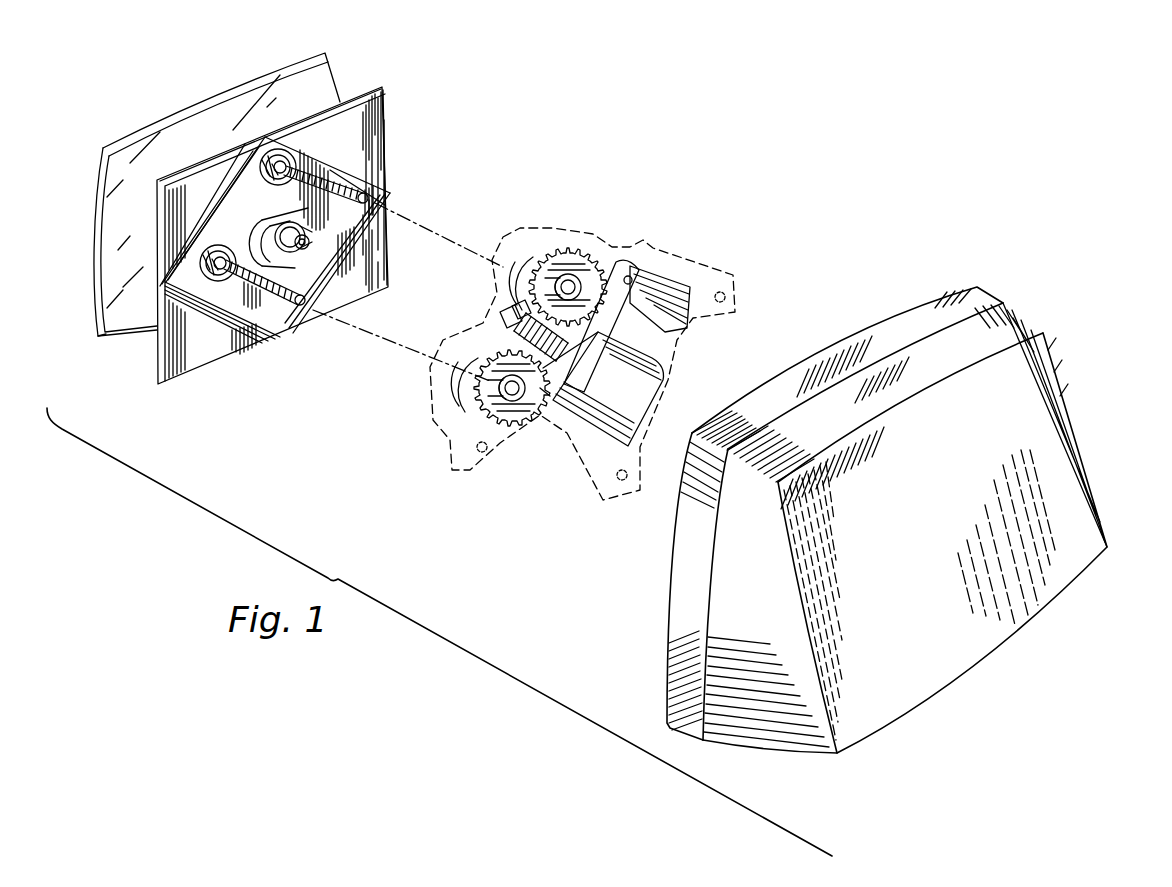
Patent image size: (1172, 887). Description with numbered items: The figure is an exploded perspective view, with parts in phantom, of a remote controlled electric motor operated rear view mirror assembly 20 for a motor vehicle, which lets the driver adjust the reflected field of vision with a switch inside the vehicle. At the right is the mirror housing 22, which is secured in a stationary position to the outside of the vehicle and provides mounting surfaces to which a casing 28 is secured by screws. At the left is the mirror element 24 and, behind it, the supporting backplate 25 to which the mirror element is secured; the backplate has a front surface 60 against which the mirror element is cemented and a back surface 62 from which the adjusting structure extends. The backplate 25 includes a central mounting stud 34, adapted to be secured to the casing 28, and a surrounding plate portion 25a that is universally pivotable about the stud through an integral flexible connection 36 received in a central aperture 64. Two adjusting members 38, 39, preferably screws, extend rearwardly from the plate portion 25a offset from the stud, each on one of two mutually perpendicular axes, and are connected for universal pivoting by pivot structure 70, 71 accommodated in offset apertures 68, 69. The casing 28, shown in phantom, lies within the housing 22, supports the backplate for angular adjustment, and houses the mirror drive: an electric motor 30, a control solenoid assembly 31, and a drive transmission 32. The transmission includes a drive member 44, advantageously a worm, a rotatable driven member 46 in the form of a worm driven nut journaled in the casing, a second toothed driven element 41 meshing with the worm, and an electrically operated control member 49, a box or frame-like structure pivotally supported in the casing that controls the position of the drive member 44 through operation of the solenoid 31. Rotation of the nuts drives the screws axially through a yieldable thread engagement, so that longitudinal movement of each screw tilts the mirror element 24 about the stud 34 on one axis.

The mirror assembly 20 is at (806, 226).
The mirror housing 22 is at (1068, 438).
The mirror element 24 is at (192, 104).
The supporting backplate 25 is at (385, 138).
The plate portion 25a is at (380, 263).
The casing 28 is at (600, 240).
The electric motor 30 is at (625, 395).
The control solenoid assembly 31 is at (670, 316).
The drive transmission 32 is at (550, 396).
The central mounting stud 34 is at (313, 233).
The integral flexible connection 36 is at (275, 219).
The adjusting member 38 is at (284, 300).
The adjusting member 39 is at (318, 178).
The upper gear 41 is at (558, 287).
The drive member 44 is at (498, 314).
The driven member 46 is at (500, 389).
The control member 49 is at (617, 330).
The front surface 60 is at (368, 93).
The back surface 62 is at (384, 107).
The central aperture 64 is at (287, 256).
The offset aperture 68 is at (224, 287).
The offset aperture 69 is at (297, 153).
The pivot structure 70 is at (210, 243).
The pivot structure 71 is at (262, 160).